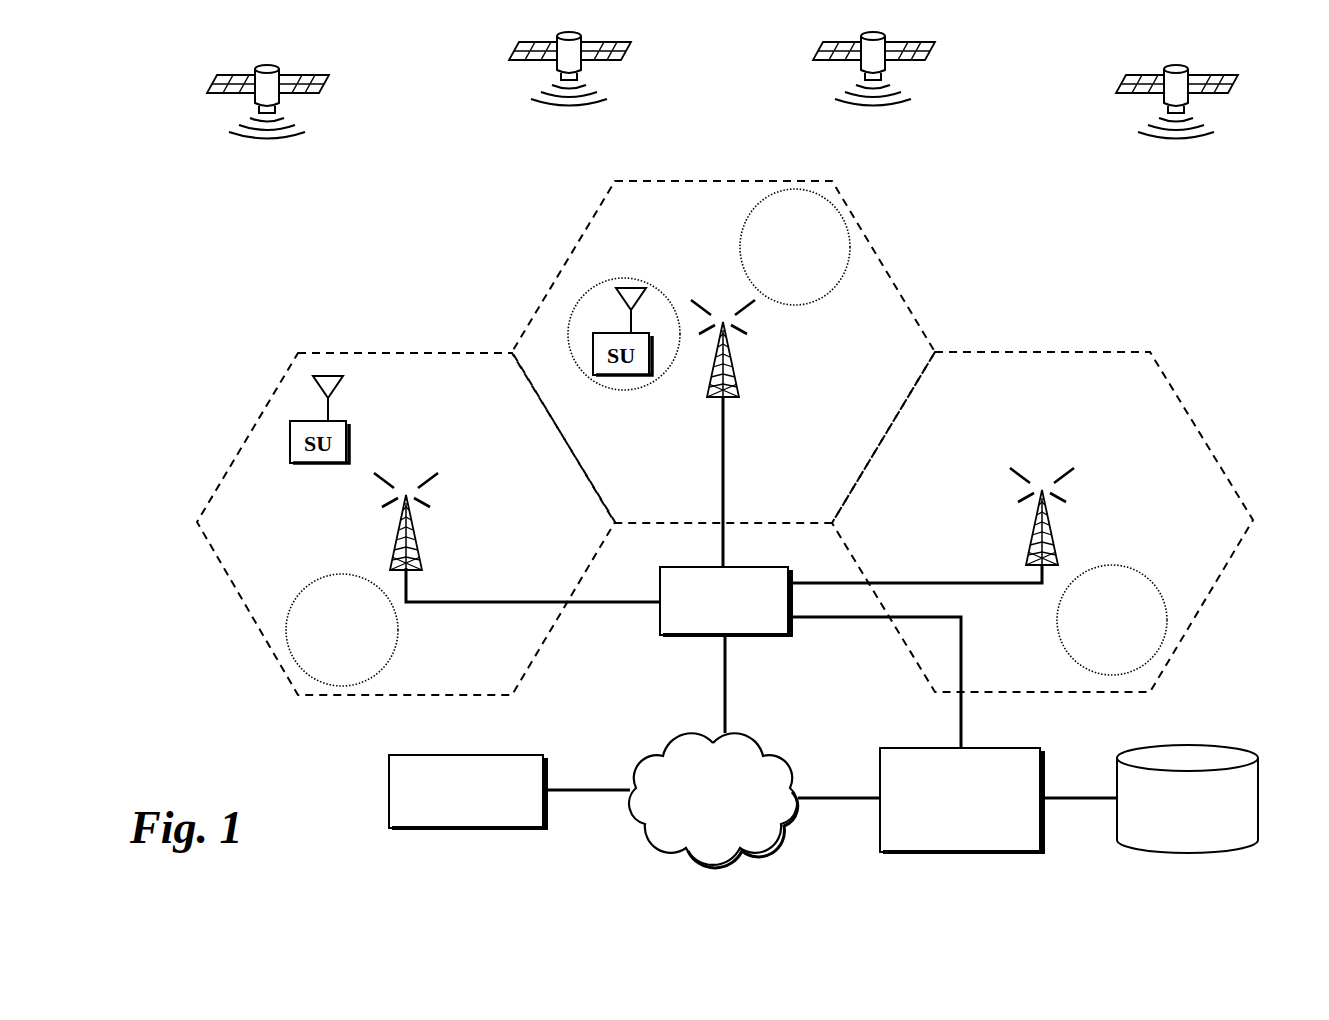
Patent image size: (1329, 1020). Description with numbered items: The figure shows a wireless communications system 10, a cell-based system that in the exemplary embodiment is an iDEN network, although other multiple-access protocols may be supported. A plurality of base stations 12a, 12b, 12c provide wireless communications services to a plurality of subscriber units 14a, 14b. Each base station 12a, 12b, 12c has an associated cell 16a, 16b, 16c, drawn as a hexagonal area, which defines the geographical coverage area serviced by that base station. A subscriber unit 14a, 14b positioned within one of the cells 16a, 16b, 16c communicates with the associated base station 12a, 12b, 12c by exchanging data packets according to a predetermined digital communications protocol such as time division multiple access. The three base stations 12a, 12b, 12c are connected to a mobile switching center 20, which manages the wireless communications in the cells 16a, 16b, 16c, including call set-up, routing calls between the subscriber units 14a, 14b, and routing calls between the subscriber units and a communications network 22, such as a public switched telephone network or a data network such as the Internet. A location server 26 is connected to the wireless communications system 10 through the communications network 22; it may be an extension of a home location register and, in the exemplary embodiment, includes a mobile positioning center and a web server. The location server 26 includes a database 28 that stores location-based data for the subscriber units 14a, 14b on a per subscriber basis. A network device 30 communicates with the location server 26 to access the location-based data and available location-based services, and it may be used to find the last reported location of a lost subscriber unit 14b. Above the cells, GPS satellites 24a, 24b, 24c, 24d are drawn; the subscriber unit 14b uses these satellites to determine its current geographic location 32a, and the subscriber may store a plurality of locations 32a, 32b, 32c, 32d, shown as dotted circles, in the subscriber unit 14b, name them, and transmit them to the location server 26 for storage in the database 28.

The wireless communications system 10 is at (463, 292).
The base station 12a is at (423, 563).
The base station 12b is at (738, 392).
The base station 12c is at (1057, 558).
The subscriber unit 14a is at (313, 463).
The subscriber unit 14b is at (625, 376).
The cell 16a is at (196, 522).
The cell 16b is at (722, 181).
The cell 16c is at (1040, 351).
The mobile switching center 20 is at (756, 566).
The communications network 22 is at (740, 742).
The GPS satellite 24a is at (325, 90).
The GPS satellite 24b is at (628, 54).
The GPS satellite 24c is at (932, 56).
The GPS satellite 24d is at (1236, 88).
The location server 26 is at (955, 853).
The database 28 is at (1258, 798).
The network device 30 is at (388, 790).
The current geographic location 32a is at (623, 279).
The location 32b is at (851, 246).
The location 32c is at (287, 630).
The location 32d is at (1167, 620).